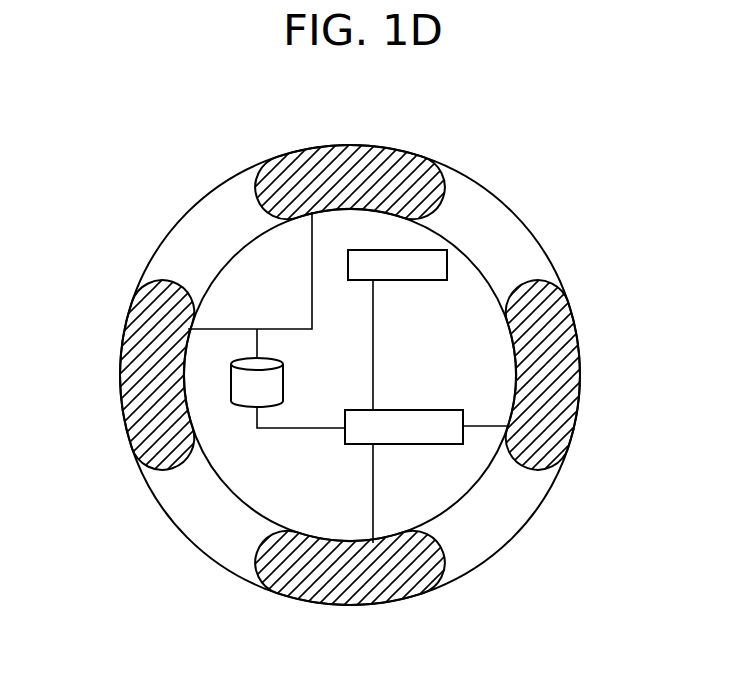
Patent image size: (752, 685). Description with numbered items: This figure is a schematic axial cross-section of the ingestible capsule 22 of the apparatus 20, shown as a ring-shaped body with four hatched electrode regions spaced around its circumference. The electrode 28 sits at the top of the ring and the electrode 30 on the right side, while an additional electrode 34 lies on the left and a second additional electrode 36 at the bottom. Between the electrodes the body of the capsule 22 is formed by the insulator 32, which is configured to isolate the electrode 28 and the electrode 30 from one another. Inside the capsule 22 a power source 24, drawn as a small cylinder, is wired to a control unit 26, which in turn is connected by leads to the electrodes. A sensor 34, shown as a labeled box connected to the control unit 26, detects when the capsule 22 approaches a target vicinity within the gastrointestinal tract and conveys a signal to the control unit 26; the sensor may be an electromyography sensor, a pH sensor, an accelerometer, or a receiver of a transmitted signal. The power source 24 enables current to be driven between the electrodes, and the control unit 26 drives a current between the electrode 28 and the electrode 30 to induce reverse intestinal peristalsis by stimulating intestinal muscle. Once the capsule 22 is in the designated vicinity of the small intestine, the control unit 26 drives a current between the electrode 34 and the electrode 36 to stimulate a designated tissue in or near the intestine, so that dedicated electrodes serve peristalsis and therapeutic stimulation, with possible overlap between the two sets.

The apparatus 20 is at (522, 145).
The ingestible capsule 22 is at (430, 160).
The power source 24 is at (284, 389).
The control unit 26 is at (410, 445).
The electrode 28 is at (290, 158).
The electrode 30 is at (578, 338).
The insulator 32 is at (186, 215).
The sensor / additional electrode 34 is at (145, 338).
The second additional electrode 36 is at (380, 590).